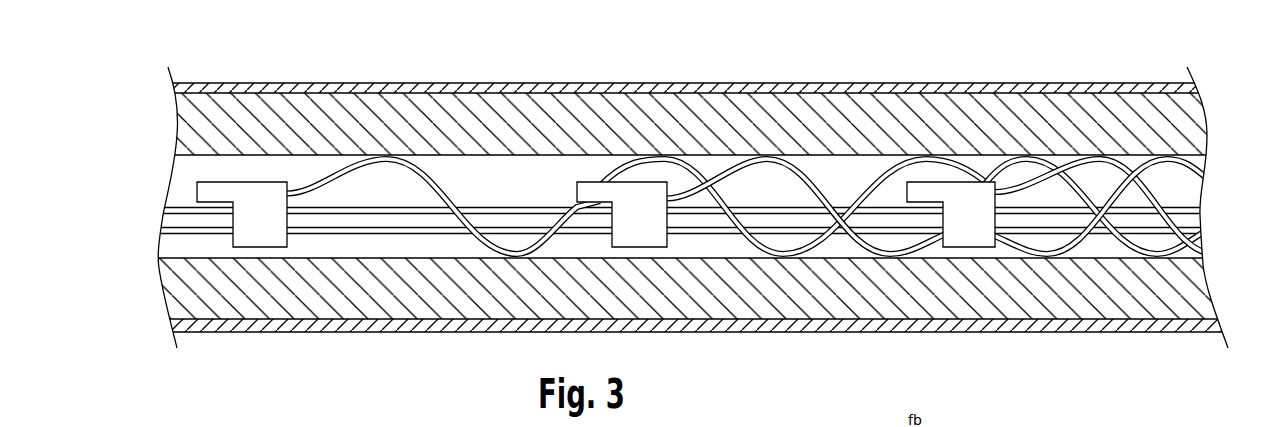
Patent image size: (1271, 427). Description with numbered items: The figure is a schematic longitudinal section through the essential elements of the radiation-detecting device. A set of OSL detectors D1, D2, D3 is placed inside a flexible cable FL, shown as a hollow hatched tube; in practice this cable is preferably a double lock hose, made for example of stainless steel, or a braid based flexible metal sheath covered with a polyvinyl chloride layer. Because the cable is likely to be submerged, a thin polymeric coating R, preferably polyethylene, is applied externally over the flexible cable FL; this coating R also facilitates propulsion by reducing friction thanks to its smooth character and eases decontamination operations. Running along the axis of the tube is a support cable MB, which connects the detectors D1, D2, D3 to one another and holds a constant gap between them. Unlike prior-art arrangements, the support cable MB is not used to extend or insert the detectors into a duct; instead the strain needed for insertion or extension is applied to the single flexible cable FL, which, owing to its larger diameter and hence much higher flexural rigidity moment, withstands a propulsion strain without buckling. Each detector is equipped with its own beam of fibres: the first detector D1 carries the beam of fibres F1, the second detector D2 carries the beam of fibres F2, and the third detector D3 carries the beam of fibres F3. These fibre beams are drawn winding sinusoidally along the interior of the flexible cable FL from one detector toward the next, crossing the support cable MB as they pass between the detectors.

The polymeric coating R is at (300, 88).
The flexible cable FL is at (450, 130).
The support cable MB is at (177, 207).
The beam of fibres F1 is at (345, 173).
The beam of fibres F2 is at (727, 177).
The beam of fibres F3 is at (1120, 167).
The OSL detector D1 is at (272, 272).
The OSL detector D2 is at (677, 261).
The OSL detector D3 is at (981, 268).